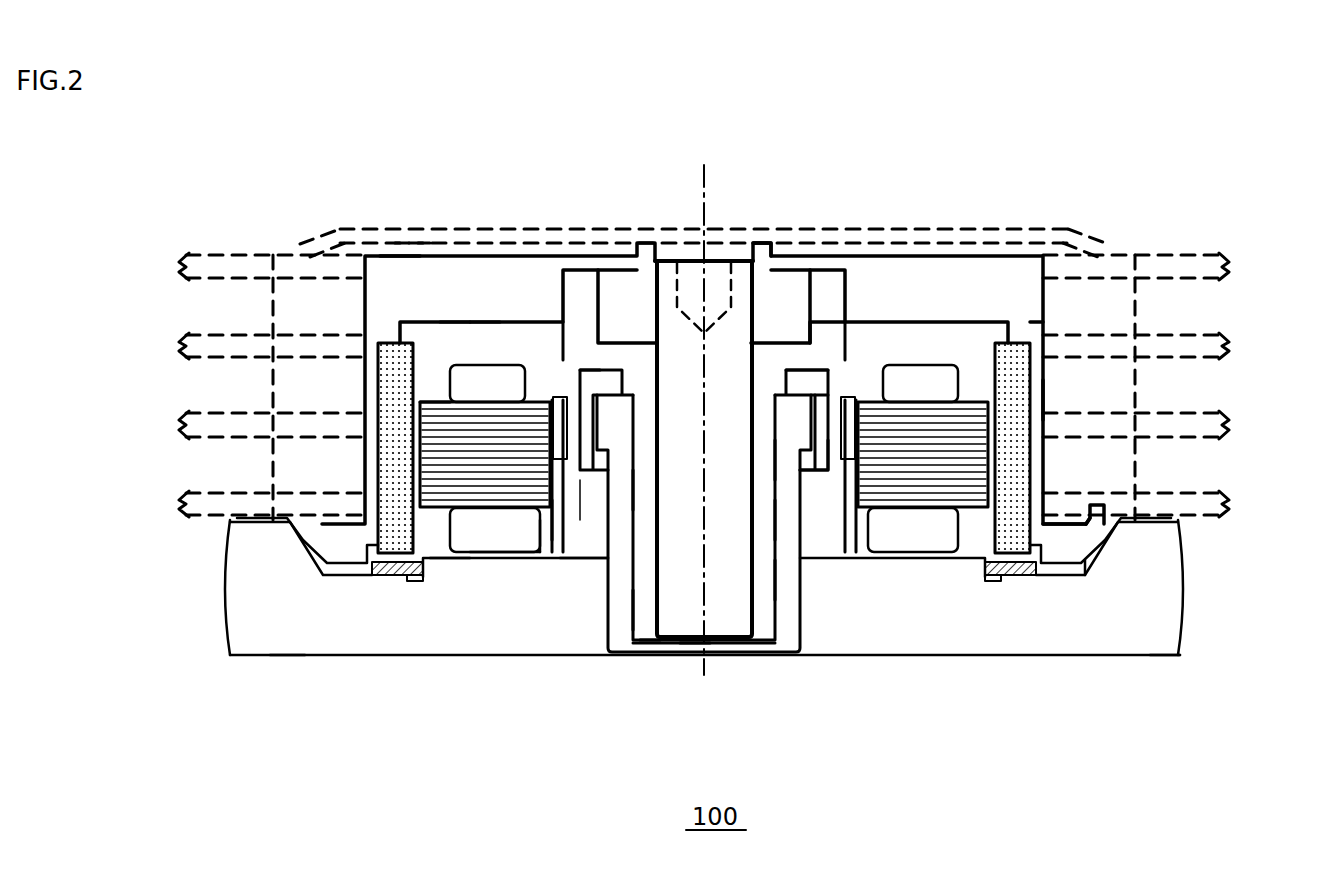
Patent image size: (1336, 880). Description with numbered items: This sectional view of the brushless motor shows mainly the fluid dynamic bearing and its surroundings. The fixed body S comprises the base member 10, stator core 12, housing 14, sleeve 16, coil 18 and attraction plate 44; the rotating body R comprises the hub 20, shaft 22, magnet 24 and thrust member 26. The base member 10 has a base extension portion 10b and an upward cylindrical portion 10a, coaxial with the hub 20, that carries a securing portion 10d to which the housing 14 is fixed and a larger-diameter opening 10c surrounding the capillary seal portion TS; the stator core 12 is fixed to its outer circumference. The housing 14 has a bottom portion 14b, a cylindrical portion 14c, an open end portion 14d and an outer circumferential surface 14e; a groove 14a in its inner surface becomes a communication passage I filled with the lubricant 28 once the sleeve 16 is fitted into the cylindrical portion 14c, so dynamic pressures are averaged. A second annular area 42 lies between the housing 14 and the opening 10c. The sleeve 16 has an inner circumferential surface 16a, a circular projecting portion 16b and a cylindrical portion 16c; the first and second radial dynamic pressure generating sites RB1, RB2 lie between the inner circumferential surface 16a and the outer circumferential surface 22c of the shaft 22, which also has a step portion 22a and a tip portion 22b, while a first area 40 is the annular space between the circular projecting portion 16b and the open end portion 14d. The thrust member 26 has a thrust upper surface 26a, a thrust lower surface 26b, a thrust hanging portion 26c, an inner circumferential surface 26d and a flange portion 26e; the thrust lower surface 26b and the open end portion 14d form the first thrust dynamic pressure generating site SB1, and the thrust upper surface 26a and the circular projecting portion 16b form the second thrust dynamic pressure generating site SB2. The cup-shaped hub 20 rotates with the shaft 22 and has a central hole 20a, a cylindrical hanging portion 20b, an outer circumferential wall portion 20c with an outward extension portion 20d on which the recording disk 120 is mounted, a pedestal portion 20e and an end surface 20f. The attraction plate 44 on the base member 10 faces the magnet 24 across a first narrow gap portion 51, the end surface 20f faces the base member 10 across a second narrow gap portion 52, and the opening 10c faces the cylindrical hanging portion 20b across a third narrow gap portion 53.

The base member 10 is at (258, 657).
The cylindrical portion 10a is at (600, 560).
The base extension portion 10b is at (460, 560).
The opening 10c is at (437, 415).
The securing portion 10d is at (607, 600).
The stator core 12 is at (398, 257).
The housing 14 is at (633, 580).
The groove 14a is at (840, 585).
The bottom portion 14b is at (782, 590).
The cylindrical portion 14c is at (630, 600).
The open end portion 14d is at (855, 560).
The outer circumferential surface 14e is at (595, 500).
The sleeve 16 is at (655, 640).
The inner circumferential surface 16a is at (695, 644).
The circular projecting portion 16b is at (584, 362).
The cylindrical portion 16c is at (808, 565).
The coil 18 is at (490, 557).
The hub 20 is at (800, 290).
The central hole 20a is at (745, 262).
The cylindrical hanging portion 20b is at (840, 400).
The outer circumferential wall portion 20c is at (1043, 400).
The outward extension portion 20d is at (1095, 515).
The pedestal portion 20e is at (1038, 335).
The end surface 20f is at (1105, 538).
The shaft 22 is at (728, 640).
The step portion 22a is at (757, 340).
The tip portion 22b is at (702, 638).
The outer circumferential surface 22c is at (653, 262).
The magnet 24 is at (1005, 365).
The thrust member 26 is at (935, 560).
The thrust upper surface 26a is at (560, 340).
The thrust lower surface 26b is at (845, 340).
The thrust hanging portion 26c is at (560, 520).
The inner circumferential surface 26d is at (482, 340).
The flange portion 26e is at (468, 330).
The lubricant 28 is at (968, 560).
The first area 40 is at (560, 400).
The second annular area 42 is at (530, 545).
The attraction plate 44 is at (396, 578).
The first narrow gap portion 51 is at (1085, 578).
The second narrow gap portion 52 is at (1165, 560).
The third narrow gap portion 53 is at (1012, 578).
The recording disk 120 is at (1200, 508).
The rotating body R is at (411, 243).
The fixed body S is at (287, 672).
The communication passage I is at (645, 645).
The first radial dynamic pressure generating site RB1 is at (762, 600).
The second radial dynamic pressure generating site RB2 is at (697, 345).
The first thrust dynamic pressure generating site SB1 is at (583, 520).
The second thrust dynamic pressure generating site SB2 is at (800, 360).
The capillary seal portion TS is at (870, 560).